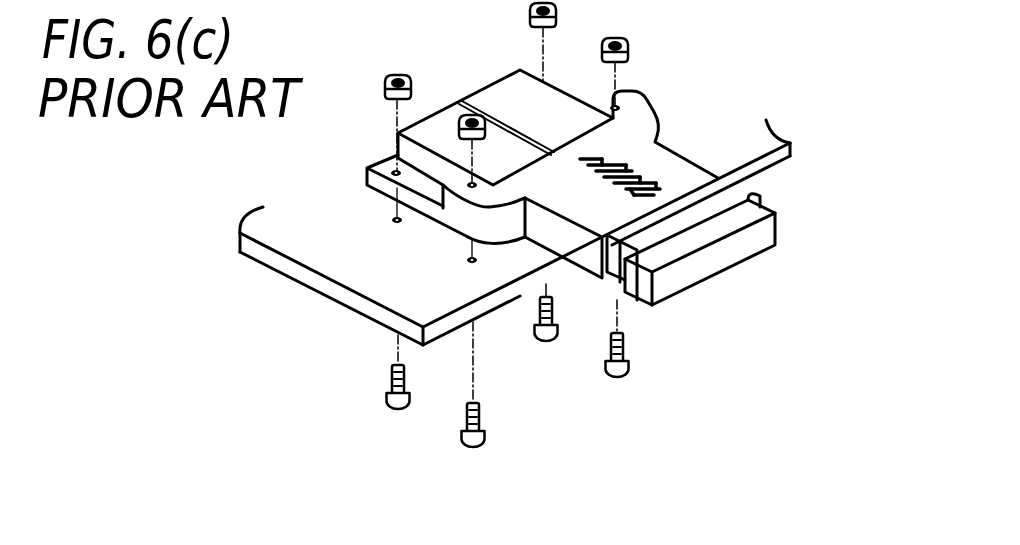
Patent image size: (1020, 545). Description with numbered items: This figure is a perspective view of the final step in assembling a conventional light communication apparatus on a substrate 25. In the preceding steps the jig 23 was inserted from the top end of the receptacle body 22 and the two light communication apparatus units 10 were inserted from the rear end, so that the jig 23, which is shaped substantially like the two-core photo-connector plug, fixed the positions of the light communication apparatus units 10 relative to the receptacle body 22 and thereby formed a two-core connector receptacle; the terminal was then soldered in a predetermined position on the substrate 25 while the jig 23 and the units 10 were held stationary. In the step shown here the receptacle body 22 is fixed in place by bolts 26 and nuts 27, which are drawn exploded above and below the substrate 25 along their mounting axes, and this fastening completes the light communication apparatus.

The light communication apparatus unit 10 is at (442, 117).
The receptacle body 22 is at (662, 165).
The jig 23 is at (683, 243).
The substrate 25 is at (360, 277).
The bolts 26 is at (546, 342).
The nuts 27 is at (408, 80).